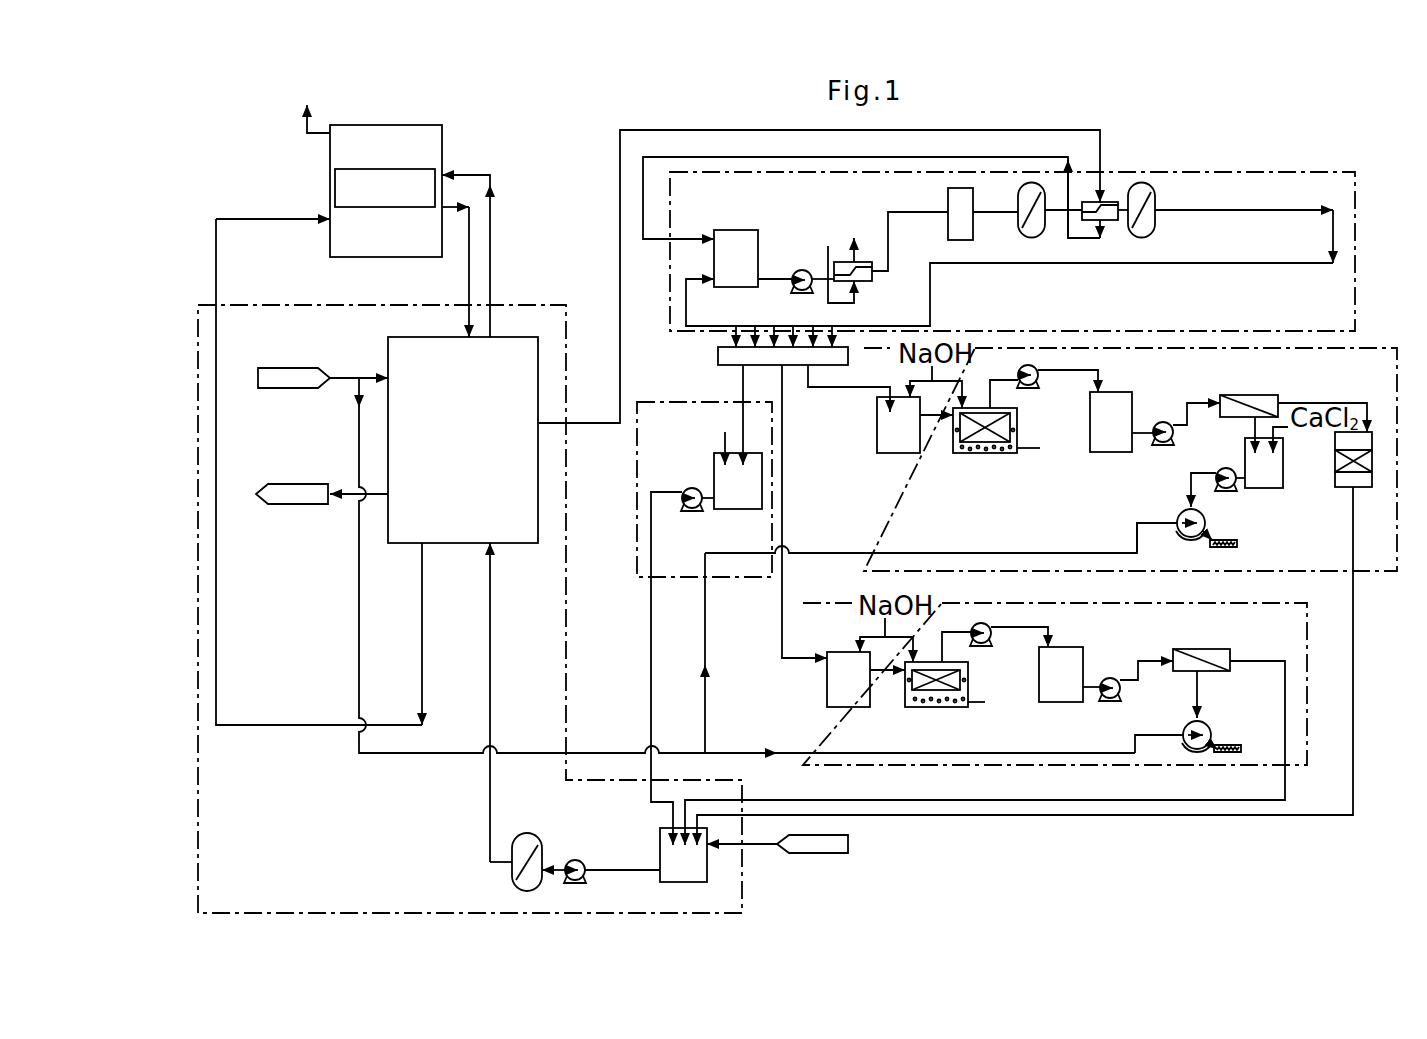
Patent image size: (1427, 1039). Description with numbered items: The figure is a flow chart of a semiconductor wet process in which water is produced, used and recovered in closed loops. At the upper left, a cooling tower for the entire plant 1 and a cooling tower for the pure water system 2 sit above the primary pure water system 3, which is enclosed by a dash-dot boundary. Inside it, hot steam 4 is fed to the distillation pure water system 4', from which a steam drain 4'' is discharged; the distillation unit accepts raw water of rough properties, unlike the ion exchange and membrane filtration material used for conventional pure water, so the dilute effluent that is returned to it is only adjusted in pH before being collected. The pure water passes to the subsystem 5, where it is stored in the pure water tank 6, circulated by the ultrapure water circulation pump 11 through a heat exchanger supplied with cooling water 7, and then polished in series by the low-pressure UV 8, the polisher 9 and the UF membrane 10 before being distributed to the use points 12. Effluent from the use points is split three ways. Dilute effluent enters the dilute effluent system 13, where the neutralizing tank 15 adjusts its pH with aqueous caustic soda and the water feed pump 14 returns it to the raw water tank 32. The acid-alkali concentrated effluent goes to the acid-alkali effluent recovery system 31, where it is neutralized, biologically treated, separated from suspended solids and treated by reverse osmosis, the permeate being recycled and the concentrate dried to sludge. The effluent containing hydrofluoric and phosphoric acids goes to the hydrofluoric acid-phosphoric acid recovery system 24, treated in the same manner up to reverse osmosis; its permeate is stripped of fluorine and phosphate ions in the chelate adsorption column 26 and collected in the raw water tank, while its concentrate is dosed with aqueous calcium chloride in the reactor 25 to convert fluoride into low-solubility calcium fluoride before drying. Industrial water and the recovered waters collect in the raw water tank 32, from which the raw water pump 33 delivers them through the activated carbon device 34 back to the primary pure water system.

The cooling tower for entire plant 1 is at (432, 140).
The cooling tower for pure water system 2 is at (345, 188).
The primary pure water system 3 is at (318, 305).
The hot steam 4 is at (323, 359).
The distillation pure water system 4' is at (460, 471).
The steam drain 4'' is at (322, 475).
The subsystem 5 is at (1245, 172).
The pure water tank 6 is at (733, 230).
The cooling water 7 is at (829, 246).
The low-pressure UV 8 is at (948, 230).
The polisher 9 is at (1018, 232).
The UF membrane 10 is at (1150, 230).
The ultrapure water circulation pump 11 is at (800, 270).
The use points 12 is at (718, 357).
The dilute effluent system 13 is at (690, 402).
The water feed pump 14 is at (694, 488).
The neutralizing tank 15 is at (738, 518).
The hydrofluoric acid-phosphoric acid recovery system 24 is at (1398, 348).
The reactor 25 is at (1265, 488).
The adsorption column 26 is at (1374, 440).
The acid-alkali effluent recovery system (concentrated waste liquid) 31 is at (850, 603).
The raw water tank 32 is at (665, 878).
The raw water pump 33 is at (578, 860).
The activated carbon device 34 is at (512, 882).